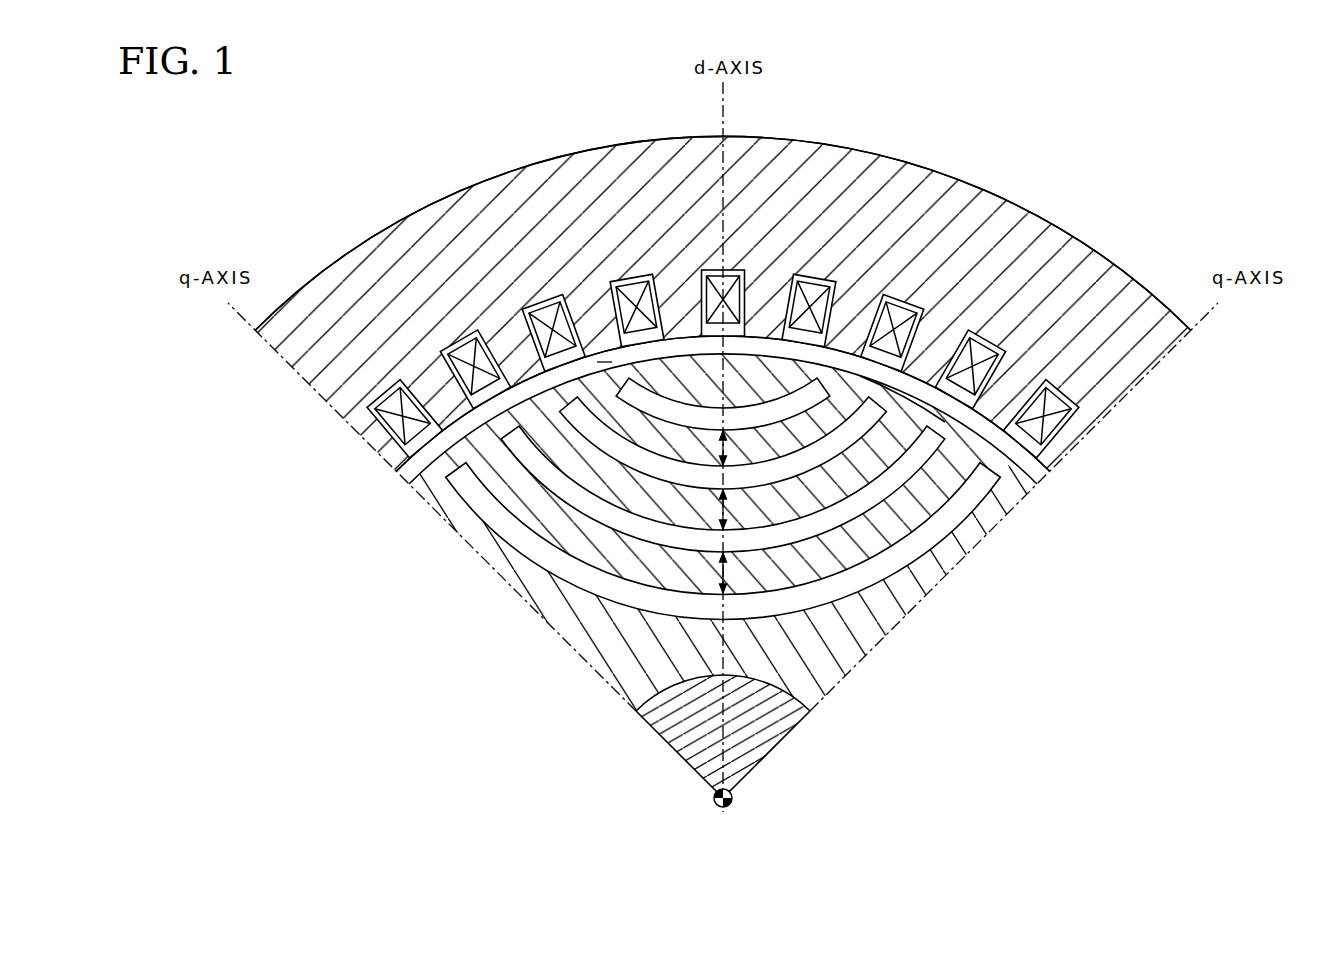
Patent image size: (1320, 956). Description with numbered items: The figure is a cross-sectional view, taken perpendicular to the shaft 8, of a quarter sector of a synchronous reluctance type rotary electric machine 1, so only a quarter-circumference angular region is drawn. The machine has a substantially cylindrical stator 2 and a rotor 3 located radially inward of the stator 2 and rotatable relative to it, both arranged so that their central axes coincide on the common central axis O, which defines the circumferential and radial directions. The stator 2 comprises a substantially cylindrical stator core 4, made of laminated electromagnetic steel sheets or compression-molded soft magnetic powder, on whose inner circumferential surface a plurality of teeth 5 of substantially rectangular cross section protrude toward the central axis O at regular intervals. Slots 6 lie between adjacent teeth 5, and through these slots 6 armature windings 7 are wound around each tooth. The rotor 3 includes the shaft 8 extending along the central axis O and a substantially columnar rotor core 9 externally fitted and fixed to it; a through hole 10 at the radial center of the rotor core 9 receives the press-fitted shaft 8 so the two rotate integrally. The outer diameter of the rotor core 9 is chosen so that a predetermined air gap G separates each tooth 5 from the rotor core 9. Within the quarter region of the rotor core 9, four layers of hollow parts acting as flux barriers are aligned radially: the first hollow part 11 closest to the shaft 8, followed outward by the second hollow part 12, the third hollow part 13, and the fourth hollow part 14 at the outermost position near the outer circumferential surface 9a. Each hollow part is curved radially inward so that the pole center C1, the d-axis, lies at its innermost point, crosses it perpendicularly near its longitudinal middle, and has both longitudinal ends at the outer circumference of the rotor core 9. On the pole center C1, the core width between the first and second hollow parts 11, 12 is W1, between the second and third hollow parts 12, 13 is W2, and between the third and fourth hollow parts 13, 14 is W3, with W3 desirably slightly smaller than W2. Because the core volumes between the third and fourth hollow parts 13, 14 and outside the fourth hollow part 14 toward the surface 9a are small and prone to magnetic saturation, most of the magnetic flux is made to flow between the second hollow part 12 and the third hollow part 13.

The synchronous reluctance type rotary electric machine 1 is at (1055, 162).
The stator 2 is at (390, 216).
The rotor 3 is at (977, 555).
The stator core 4 is at (326, 356).
The teeth 5 is at (457, 410).
The slots 6 is at (473, 372).
The armature windings 7 is at (632, 300).
The shaft 8 is at (660, 722).
The rotor core 9 is at (605, 648).
The outer circumferential surface 9a is at (917, 393).
The through hole 10 is at (774, 692).
The first hollow part 11 is at (615, 602).
The second hollow part 12 is at (650, 452).
The third hollow part 13 is at (655, 405).
The fourth hollow part 14 is at (470, 455).
The air gap G is at (604, 358).
The pole center C1 is at (728, 101).
The central axis O is at (713, 803).
The width between first and second hollow parts W1 is at (744, 573).
The width between second and third hollow parts W2 is at (744, 509).
The width between third and fourth hollow parts W3 is at (744, 448).